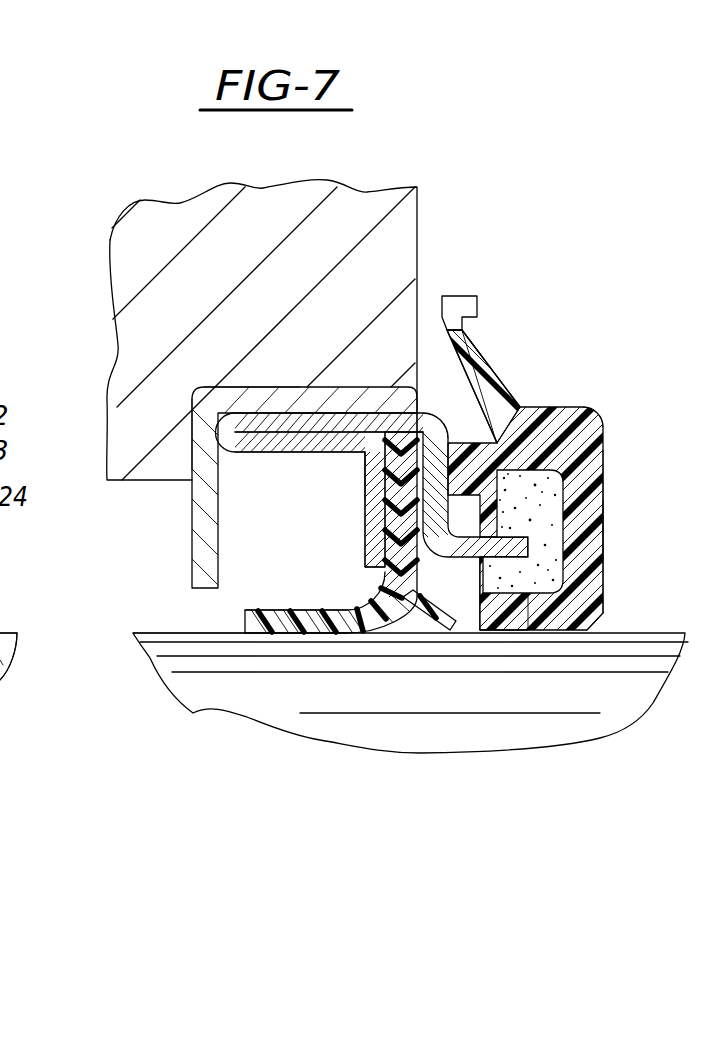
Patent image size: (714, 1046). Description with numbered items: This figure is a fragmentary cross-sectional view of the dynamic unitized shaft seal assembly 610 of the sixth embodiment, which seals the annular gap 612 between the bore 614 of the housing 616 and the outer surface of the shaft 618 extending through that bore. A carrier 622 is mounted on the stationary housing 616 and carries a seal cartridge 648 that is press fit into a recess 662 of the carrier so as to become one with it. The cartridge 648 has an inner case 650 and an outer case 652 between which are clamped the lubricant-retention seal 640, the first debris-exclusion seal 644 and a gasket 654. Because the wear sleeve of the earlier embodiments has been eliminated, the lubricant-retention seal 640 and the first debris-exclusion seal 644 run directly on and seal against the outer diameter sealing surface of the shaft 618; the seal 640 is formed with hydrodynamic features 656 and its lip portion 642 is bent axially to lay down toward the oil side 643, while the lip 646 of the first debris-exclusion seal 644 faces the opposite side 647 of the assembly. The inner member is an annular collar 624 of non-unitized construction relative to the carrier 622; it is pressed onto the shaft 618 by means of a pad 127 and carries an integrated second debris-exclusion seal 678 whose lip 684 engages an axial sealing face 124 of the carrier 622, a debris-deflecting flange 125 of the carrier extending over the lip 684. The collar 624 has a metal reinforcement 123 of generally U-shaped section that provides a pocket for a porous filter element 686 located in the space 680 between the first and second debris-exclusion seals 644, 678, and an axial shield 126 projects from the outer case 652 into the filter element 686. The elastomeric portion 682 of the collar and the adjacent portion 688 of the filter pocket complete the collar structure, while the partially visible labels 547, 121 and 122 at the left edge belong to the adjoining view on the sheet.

The shaft seal assembly 610 is at (636, 315).
The annular gap 612 is at (135, 510).
The bore 614 is at (160, 486).
The housing 616 is at (142, 221).
The shaft 618 is at (247, 712).
The carrier 622 is at (276, 376).
The collar 624 is at (615, 522).
The lubricant-retention seal 640 is at (392, 522).
The lip 642 is at (295, 613).
The oil side 643 is at (188, 627).
The first debris-exclusion seal 644 is at (367, 467).
The wiper lip 646 is at (440, 624).
The air side 647 is at (690, 605).
The seal cartridge 648 is at (313, 408).
The inner case 650 is at (205, 412).
The outer case 652 is at (213, 408).
The gasket 654 is at (408, 411).
The hydrodynamic features 656 is at (337, 632).
The recess 662 is at (176, 418).
The second debris-exclusion seal 678 is at (605, 442).
The space 680 is at (412, 612).
The seal body 682 is at (584, 428).
The lip 684 is at (480, 382).
The filter element 686 is at (527, 583).
The contact surface 688 is at (515, 585).
The shaft portion 121 is at (0, 580).
The shaft 122 is at (0, 719).
The metal reinforcement 123 is at (582, 573).
The axial sealing face 124 is at (448, 330).
The debris-deflecting flange 125 is at (463, 303).
The axial shield 126 is at (555, 503).
The pad 127 is at (585, 618).
The adjacent region 547 is at (66, 605).